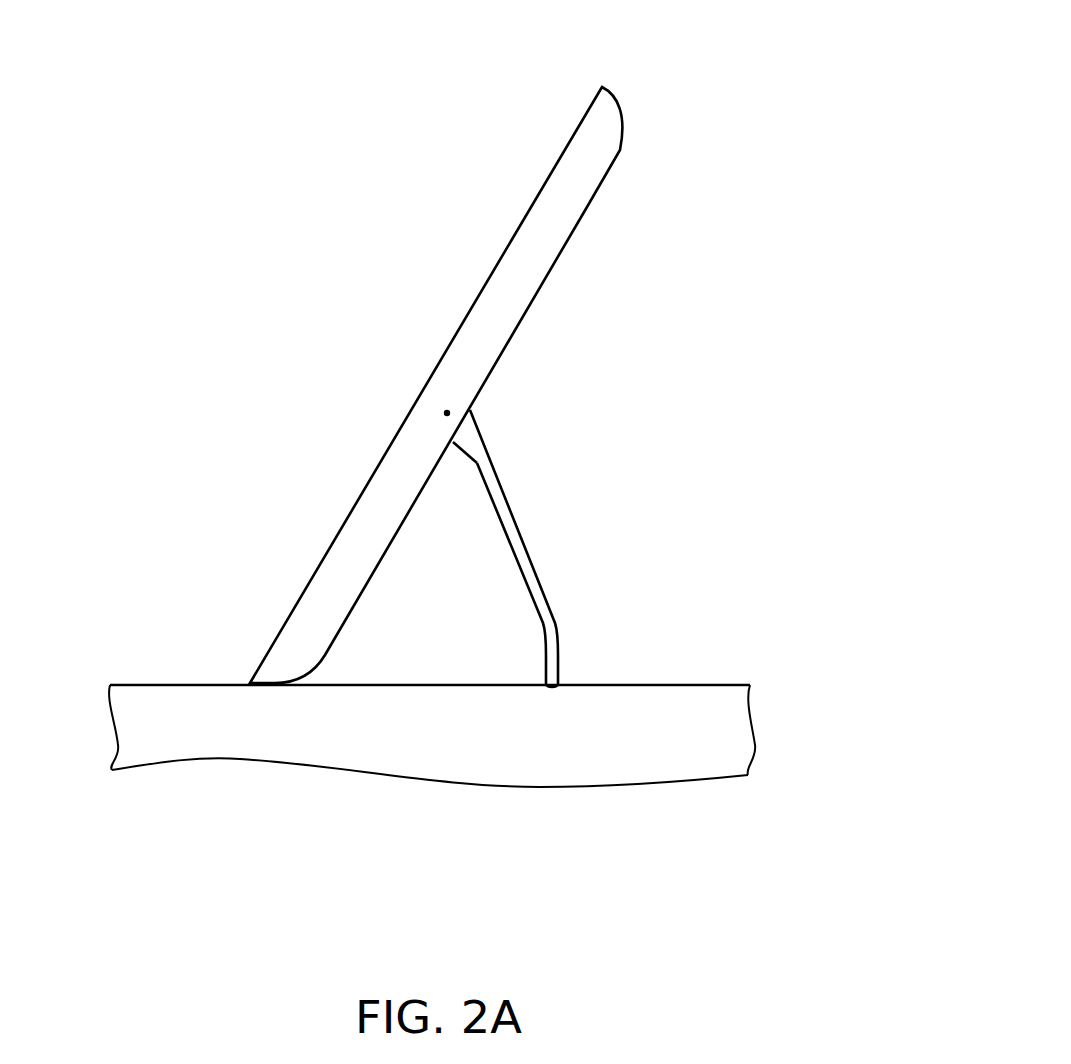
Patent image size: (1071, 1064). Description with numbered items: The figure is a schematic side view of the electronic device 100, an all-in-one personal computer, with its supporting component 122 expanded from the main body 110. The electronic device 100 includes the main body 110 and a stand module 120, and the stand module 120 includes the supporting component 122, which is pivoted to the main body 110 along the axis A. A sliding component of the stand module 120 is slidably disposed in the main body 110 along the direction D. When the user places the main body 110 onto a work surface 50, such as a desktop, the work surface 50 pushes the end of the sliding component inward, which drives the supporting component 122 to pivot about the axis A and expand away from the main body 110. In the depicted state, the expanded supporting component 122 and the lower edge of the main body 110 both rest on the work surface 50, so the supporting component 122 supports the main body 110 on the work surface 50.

The electronic device 100 is at (798, 58).
The main body 110 is at (622, 245).
The stand module 120 is at (568, 548).
The supporting component 122 is at (513, 537).
The work surface 50 is at (165, 683).
The axis A is at (449, 411).
The direction D is at (302, 513).